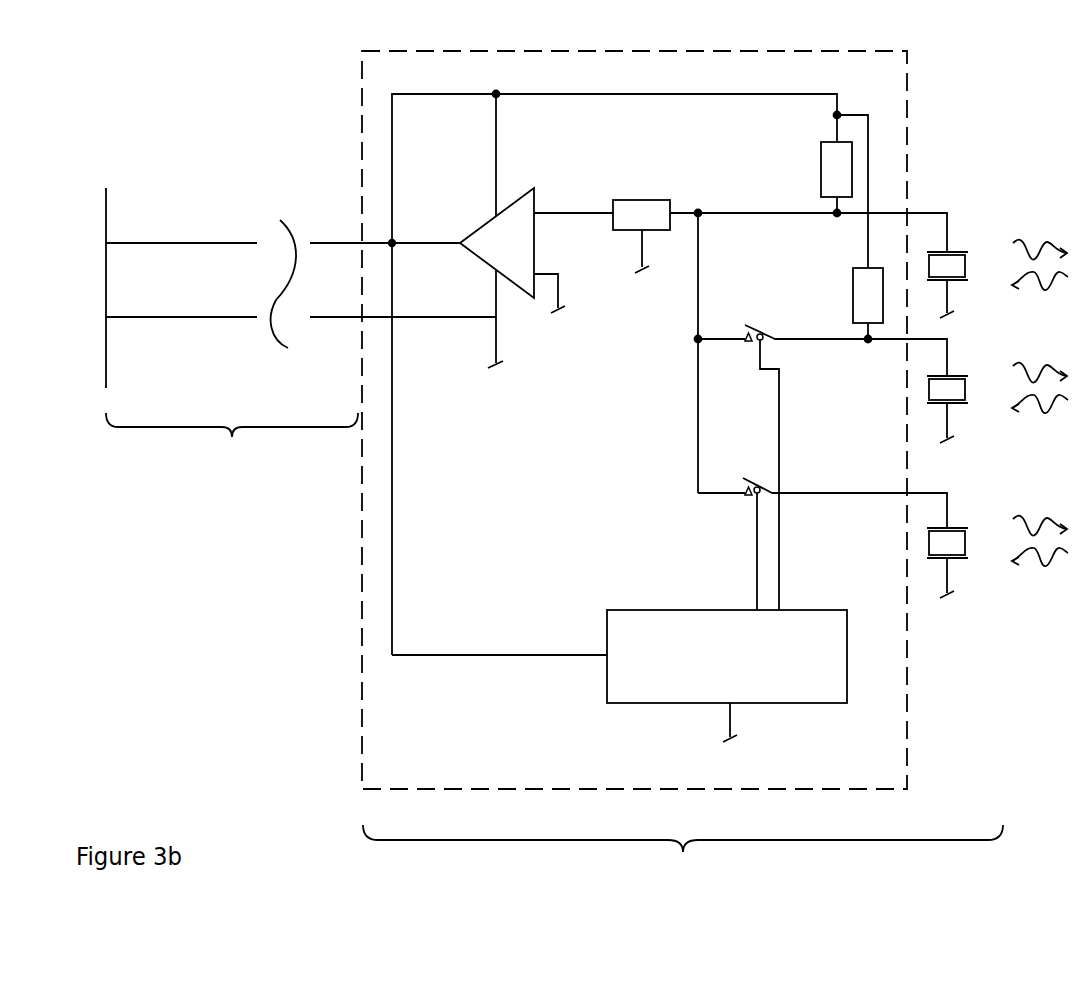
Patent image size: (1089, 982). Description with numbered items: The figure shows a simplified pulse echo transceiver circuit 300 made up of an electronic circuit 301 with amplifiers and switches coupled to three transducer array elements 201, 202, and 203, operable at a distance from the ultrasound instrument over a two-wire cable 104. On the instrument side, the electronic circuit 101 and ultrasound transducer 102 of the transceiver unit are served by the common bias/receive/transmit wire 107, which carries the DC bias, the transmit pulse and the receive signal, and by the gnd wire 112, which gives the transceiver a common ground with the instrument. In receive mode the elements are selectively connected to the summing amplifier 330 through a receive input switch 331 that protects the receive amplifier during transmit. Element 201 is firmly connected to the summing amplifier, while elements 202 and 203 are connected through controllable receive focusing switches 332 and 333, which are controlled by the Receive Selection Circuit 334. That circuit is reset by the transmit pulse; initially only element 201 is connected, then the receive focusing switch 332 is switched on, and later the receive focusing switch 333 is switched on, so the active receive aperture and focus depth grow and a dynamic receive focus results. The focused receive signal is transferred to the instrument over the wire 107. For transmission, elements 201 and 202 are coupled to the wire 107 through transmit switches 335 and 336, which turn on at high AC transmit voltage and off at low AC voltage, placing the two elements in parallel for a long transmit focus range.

The electronic circuit 101 is at (80, 288).
The ultrasound transducer 102 is at (201, 284).
The multi wire cable 104 is at (232, 440).
The common bias/receive/transmit wire 107 is at (385, 231).
The gnd wire 112 is at (403, 303).
The transducer array element 201 is at (997, 271).
The transducer array element 202 is at (997, 396).
The transducer array element 203 is at (997, 553).
The pulse echo transceiver circuit 300 is at (683, 863).
The electronic circuit 301 is at (634, 404).
The summing amplifier 330 is at (512, 250).
The receive input switch 331 is at (641, 236).
The receive focusing switch 332 is at (748, 454).
The receive focusing switch 333 is at (744, 533).
The Receive Selection Circuit 334 is at (727, 676).
The transmit switch 335 is at (817, 164).
The transmit switch 336 is at (848, 303).